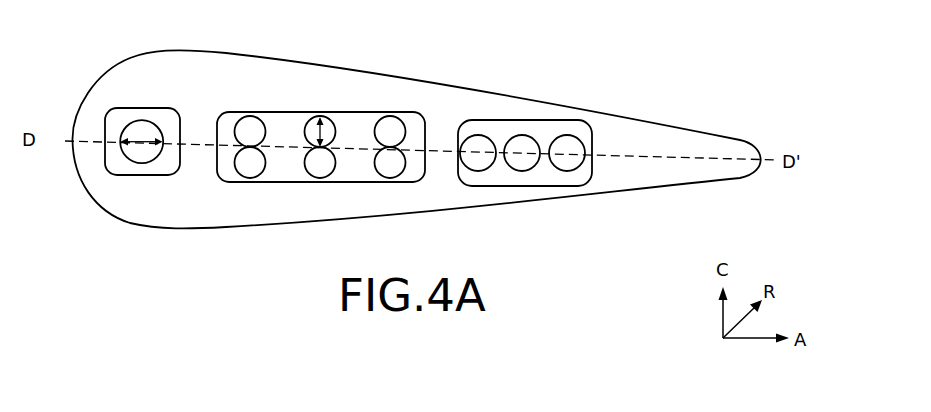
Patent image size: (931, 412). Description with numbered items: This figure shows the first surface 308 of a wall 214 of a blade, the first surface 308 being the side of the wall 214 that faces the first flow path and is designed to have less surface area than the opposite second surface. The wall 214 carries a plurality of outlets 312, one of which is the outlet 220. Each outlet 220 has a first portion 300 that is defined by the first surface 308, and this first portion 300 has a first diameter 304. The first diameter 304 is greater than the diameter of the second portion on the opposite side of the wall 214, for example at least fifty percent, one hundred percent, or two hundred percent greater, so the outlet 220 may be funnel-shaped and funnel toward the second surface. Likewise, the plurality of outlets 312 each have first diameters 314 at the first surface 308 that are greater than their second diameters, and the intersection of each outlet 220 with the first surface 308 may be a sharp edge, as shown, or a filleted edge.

The outlet 220 is at (140, 133).
The first portion 300 is at (132, 148).
The first diameter 304 is at (142, 152).
The plurality of outlets 312 is at (247, 114).
The wall 214 is at (293, 128).
The first diameters 314 is at (325, 132).
The first surface 308 is at (372, 128).